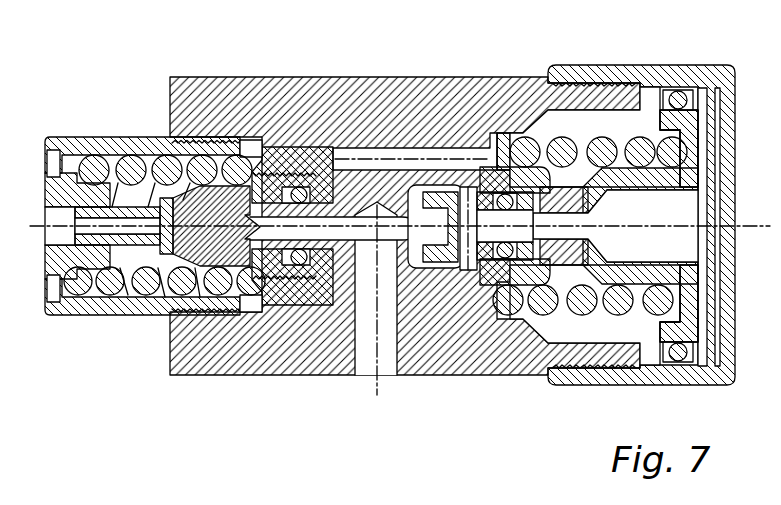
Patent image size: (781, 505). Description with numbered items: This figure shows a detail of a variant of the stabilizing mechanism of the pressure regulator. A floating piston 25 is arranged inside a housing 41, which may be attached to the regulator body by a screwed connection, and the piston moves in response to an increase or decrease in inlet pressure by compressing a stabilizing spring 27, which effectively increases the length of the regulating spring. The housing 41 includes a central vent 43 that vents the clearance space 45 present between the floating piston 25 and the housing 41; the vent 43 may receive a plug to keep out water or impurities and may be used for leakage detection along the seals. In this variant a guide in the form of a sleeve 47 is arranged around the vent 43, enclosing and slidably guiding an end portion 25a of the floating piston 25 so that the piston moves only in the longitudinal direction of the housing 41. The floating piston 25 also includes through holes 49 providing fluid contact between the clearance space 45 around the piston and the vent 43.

The housing 41 is at (150, 103).
The central vent 43 is at (43, 217).
The clearance space 45 is at (115, 153).
The sleeve 47 is at (77, 180).
The stabilizing spring 27 is at (78, 207).
The floating piston 25 is at (108, 228).
The end portion of the floating piston 25a is at (70, 297).
The through holes 49 is at (140, 270).